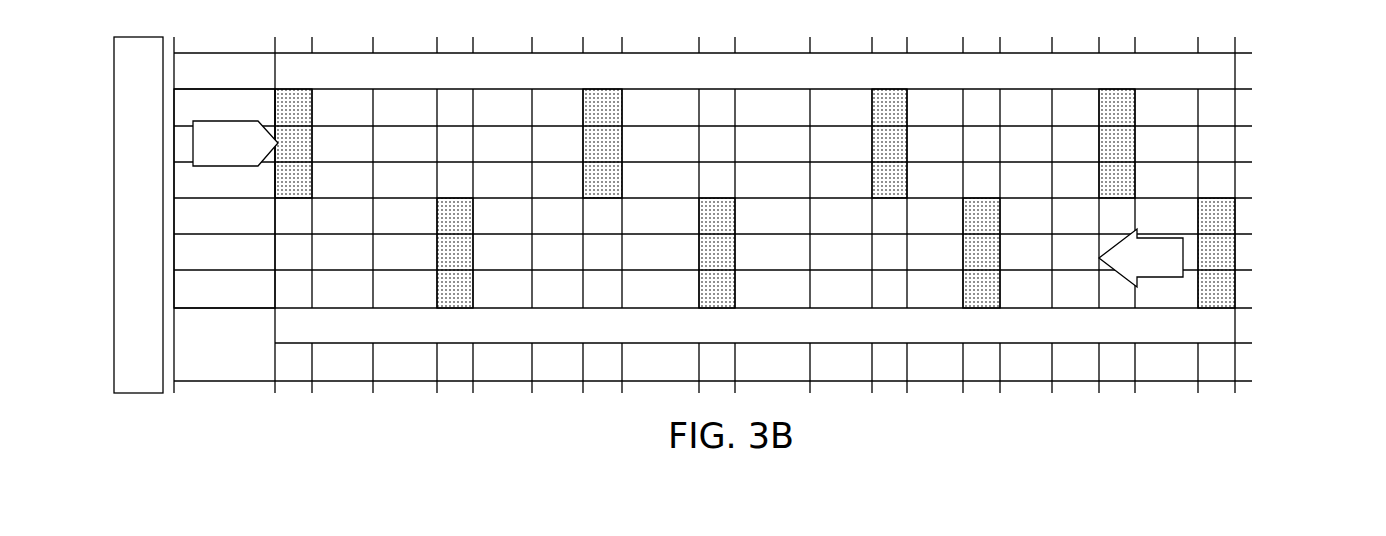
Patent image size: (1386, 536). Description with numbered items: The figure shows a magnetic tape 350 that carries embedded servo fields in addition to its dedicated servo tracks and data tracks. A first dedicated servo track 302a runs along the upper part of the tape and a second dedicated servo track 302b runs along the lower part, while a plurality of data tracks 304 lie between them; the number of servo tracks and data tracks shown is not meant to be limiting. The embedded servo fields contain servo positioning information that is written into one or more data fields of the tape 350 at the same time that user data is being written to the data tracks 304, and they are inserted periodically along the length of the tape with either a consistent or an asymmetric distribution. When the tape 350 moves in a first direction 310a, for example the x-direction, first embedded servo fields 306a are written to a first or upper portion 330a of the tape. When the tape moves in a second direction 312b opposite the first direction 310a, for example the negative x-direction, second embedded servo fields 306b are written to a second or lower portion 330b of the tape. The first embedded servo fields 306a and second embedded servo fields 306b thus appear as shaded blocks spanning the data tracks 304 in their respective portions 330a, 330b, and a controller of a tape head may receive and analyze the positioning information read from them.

The magnetic tape 350 is at (104, 77).
The first dedicated servo track 302a is at (823, 82).
The second dedicated servo track 302b is at (823, 336).
The data track 304 is at (224, 198).
The first embedded servo field 306a is at (705, 143).
The second embedded servo field 306b is at (836, 253).
The first direction 310a is at (257, 152).
The second direction 312b is at (1172, 267).
The first or upper portion 330a is at (1262, 90).
The second or lower portion 330b is at (1262, 199).